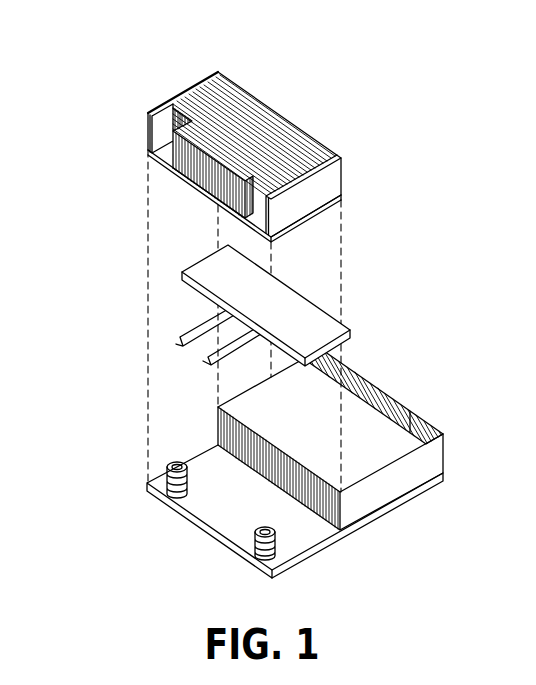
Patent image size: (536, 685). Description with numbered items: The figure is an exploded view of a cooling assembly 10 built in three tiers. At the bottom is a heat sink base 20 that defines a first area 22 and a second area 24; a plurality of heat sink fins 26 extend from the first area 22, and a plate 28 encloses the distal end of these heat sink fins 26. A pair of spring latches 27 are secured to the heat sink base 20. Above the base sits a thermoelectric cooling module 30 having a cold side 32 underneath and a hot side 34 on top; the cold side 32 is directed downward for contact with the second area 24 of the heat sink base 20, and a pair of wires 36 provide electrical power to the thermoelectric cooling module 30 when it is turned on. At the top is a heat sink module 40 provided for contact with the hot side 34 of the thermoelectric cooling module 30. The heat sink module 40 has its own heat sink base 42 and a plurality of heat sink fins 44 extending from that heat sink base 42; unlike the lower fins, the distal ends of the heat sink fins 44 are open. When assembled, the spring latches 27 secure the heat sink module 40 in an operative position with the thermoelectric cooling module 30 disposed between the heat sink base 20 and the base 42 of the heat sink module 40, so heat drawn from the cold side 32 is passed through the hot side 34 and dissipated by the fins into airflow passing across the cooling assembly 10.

The cooling assembly 10 is at (255, 319).
The heat sink base 20 is at (292, 476).
The first area 22 is at (410, 480).
The second area 24 is at (296, 541).
The heat sink fins 26 is at (237, 435).
The spring latches 27 is at (160, 492).
The plate 28 is at (388, 447).
The thermoelectric cooling module 30 is at (261, 295).
The cold side 32 is at (352, 344).
The hot side 34 is at (198, 278).
The wires 36 is at (183, 338).
The heat sink module 40 is at (269, 156).
The heat sink base 42 is at (317, 216).
The heat sink fins 44 is at (263, 122).